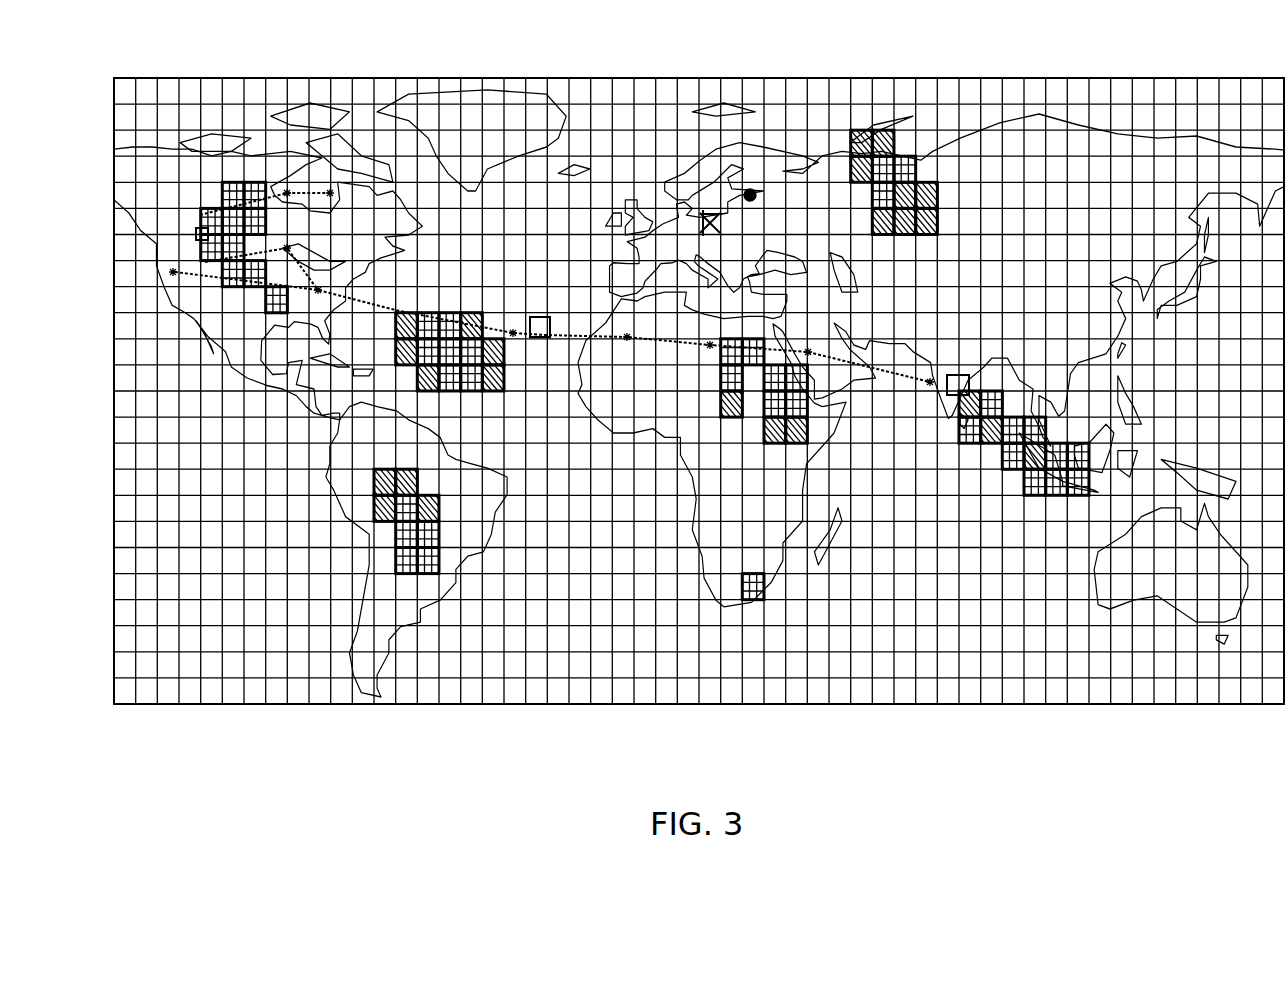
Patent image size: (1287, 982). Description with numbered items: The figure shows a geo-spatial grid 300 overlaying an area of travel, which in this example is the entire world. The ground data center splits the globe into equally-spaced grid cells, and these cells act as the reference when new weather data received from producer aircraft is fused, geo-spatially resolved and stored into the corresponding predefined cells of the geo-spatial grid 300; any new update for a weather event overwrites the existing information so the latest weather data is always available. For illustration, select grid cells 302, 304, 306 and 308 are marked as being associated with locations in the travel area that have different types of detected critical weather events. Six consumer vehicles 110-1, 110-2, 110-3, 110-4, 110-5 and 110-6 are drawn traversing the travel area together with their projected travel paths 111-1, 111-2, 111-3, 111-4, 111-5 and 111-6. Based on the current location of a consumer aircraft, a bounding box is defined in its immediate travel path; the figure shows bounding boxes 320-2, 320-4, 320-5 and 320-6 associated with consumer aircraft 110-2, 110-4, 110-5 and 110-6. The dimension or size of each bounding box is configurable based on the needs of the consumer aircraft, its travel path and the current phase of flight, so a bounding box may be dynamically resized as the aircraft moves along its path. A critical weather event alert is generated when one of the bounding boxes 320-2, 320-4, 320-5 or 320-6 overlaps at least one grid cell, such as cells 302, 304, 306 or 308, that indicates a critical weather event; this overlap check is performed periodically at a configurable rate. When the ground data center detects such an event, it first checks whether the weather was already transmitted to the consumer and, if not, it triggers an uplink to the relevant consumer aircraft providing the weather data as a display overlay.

The geo-spatial grid 300 is at (135, 632).
The grid cell 302 is at (262, 200).
The grid cell 304 is at (246, 195).
The grid cell 306 is at (250, 300).
The grid cell 308 is at (395, 495).
The consumer vehicle 110-1 is at (290, 185).
The consumer vehicle 110-2 is at (195, 268).
The consumer vehicle 110-3 is at (265, 313).
The consumer vehicle 110-4 is at (512, 318).
The consumer vehicle 110-5 is at (722, 338).
The consumer vehicle 110-6 is at (930, 390).
The projected travel path 111-1 is at (222, 262).
The projected travel path 111-2 is at (200, 210).
The projected travel path 111-3 is at (318, 292).
The projected travel path 111-4 is at (627, 335).
The projected travel path 111-5 is at (855, 350).
The projected travel path 111-6 is at (950, 378).
The bounding box 320-2 is at (284, 192).
The bounding box 320-4 is at (545, 322).
The bounding box 320-5 is at (745, 443).
The bounding box 320-6 is at (972, 392).